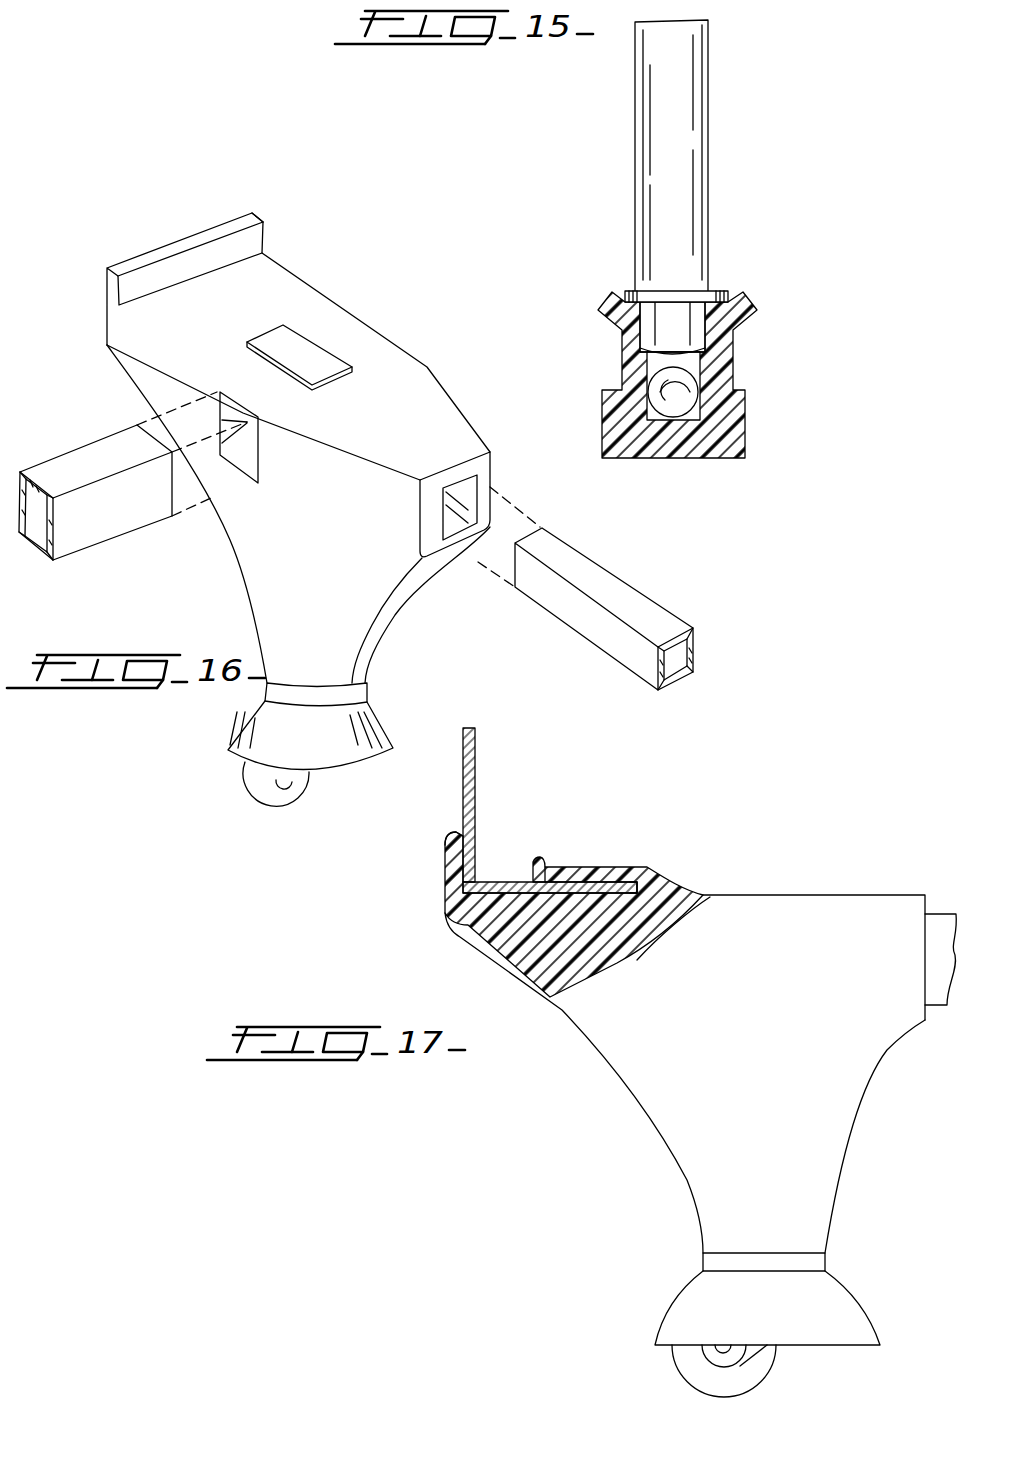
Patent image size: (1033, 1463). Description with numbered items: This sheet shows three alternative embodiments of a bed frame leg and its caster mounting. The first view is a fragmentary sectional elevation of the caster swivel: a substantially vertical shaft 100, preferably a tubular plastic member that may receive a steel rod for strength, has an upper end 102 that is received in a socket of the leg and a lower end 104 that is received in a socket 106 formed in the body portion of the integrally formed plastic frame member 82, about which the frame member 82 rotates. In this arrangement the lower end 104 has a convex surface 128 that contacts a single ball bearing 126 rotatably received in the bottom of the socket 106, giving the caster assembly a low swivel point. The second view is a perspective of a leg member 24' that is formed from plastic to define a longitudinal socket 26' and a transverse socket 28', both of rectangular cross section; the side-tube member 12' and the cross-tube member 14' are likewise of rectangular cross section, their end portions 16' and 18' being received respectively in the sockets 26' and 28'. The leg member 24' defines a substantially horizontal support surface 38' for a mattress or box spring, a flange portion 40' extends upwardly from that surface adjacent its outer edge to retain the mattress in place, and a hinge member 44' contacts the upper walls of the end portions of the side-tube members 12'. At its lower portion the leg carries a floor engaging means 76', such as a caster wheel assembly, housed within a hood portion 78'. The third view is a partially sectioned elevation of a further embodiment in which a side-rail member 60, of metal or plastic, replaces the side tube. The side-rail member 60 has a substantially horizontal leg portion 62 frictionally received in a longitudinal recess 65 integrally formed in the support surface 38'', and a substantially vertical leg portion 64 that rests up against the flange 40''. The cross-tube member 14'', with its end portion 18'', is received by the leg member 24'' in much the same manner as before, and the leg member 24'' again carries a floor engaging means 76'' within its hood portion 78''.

In FIG. 15, the frame member 82 is at (722, 405).
In FIG. 15, the shaft 100 is at (691, 227).
In FIG. 15, the upper end 102 is at (700, 64).
In FIG. 15, the lower end 104 is at (744, 311).
In FIG. 15, the socket 106 is at (653, 328).
In FIG. 15, the ball bearing 126 is at (695, 425).
In FIG. 15, the convex surface 128 is at (700, 364).
In FIG. 16, the side-tube member 12' is at (95, 467).
In FIG. 16, the cross-tube member 14' is at (632, 586).
In FIG. 16, the end portion 16' is at (95, 467).
In FIG. 16, the end portion 18' is at (604, 586).
In FIG. 16, the leg member 24' is at (298, 514).
In FIG. 16, the socket 26' is at (197, 470).
In FIG. 16, the socket 28' is at (493, 516).
In FIG. 16, the support surface 38' is at (298, 405).
In FIG. 16, the flange portion 40' is at (212, 267).
In FIG. 16, the hinge member 44' is at (311, 335).
In FIG. 16, the floor engaging means 76' is at (258, 807).
In FIG. 16, the hood portion 78' is at (328, 726).
In FIG. 17, the cross-tube member 14'' is at (933, 953).
In FIG. 17, the end portion 18'' is at (933, 989).
In FIG. 17, the leg member 24'' is at (685, 1083).
In FIG. 17, the support surface 38'' is at (685, 924).
In FIG. 17, the flange 40'' is at (417, 854).
In FIG. 17, the side-rail member 60 is at (550, 802).
In FIG. 17, the horizontal leg portion 62 is at (553, 887).
In FIG. 17, the vertical leg portion 64 is at (470, 763).
In FIG. 17, the longitudinal recess 65 is at (623, 892).
In FIG. 17, the floor engaging means 76'' is at (687, 1371).
In FIG. 17, the hood portion 78'' is at (774, 1292).